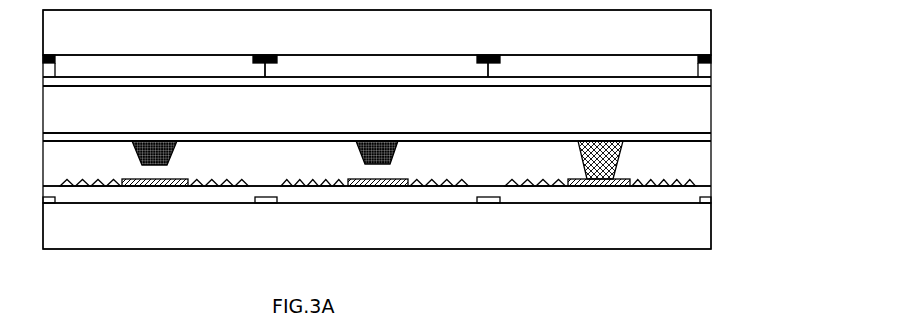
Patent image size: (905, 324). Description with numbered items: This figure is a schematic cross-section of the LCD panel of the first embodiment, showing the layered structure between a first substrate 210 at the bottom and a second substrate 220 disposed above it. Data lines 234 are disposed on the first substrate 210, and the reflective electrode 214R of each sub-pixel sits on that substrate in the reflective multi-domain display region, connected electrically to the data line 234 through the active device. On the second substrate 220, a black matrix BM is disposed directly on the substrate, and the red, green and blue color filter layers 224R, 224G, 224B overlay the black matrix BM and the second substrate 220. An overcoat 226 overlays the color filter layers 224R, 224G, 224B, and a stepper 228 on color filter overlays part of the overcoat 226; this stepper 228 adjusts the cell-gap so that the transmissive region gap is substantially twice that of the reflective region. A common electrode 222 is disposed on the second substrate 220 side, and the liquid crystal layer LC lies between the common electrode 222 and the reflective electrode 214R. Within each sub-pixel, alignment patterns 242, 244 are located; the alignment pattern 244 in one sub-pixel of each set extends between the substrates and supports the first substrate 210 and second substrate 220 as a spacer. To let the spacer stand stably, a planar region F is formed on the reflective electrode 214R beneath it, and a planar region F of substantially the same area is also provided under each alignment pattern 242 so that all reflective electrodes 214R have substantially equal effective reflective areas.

The second substrate 220 is at (697, 37).
The black matrix BM is at (266, 55).
The color filter layer 224R is at (160, 65).
The color filter layer 224G is at (376, 65).
The color filter layer 224B is at (593, 65).
The overcoat 226 is at (705, 82).
The stepper on color filter 228 is at (700, 113).
The common electrode 222 is at (702, 137).
The liquid crystal layer LC is at (702, 170).
The alignment pattern 242 is at (171, 158).
The alignment pattern 244 is at (621, 155).
The planar region F is at (137, 180).
The reflective electrode 214R is at (459, 181).
The data line 234 is at (262, 204).
The first substrate 210 is at (697, 232).